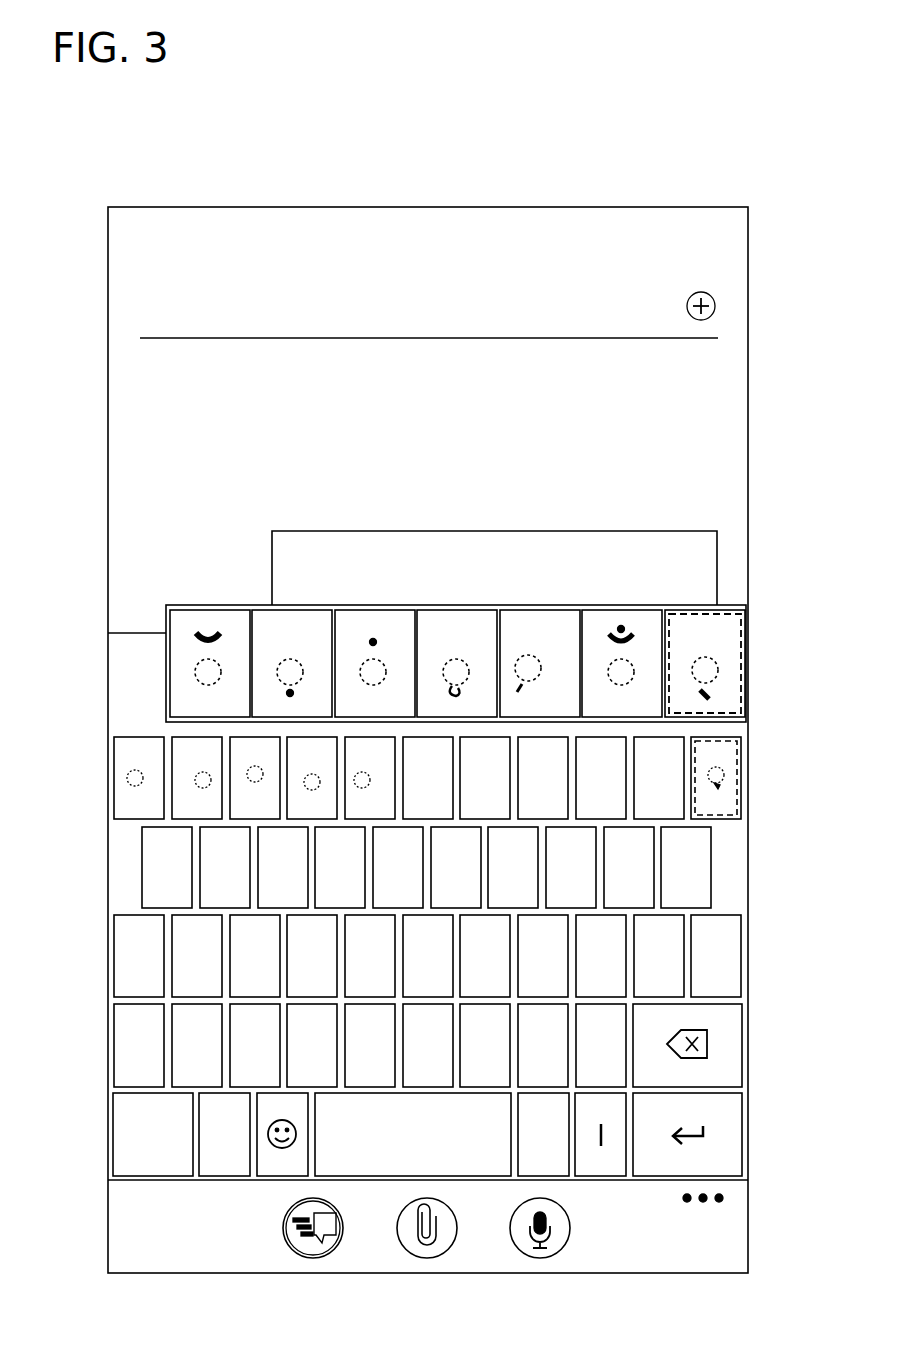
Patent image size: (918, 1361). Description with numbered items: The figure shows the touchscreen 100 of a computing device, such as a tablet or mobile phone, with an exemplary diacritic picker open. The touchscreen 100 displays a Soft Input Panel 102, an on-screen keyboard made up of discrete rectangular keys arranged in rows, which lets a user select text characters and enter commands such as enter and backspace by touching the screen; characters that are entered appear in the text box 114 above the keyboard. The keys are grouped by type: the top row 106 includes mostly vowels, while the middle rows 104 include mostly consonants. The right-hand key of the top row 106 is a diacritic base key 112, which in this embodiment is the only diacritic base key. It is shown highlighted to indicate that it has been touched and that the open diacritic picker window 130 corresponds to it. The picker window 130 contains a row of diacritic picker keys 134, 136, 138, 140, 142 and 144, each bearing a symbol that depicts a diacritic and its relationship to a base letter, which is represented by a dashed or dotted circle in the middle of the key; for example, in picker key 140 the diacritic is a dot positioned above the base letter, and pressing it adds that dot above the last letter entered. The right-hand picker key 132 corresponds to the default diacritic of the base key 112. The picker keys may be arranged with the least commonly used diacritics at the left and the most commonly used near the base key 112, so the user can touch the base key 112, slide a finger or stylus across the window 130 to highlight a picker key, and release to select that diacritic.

The touchscreen 100 is at (158, 176).
The soft input panel 102 is at (52, 640).
The middle rows 104 is at (100, 826).
The top row 106 is at (100, 731).
The diacritic base key 112 is at (733, 781).
The text box 114 is at (288, 560).
The diacritic picker window 130 is at (783, 607).
The right hand picker key 132 is at (726, 641).
The diacritic picker key 134 is at (624, 625).
The diacritic picker key 136 is at (541, 625).
The diacritic picker key 138 is at (458, 625).
The diacritic picker key 140 is at (375, 625).
The diacritic picker key 142 is at (275, 628).
The diacritic picker key 144 is at (180, 687).